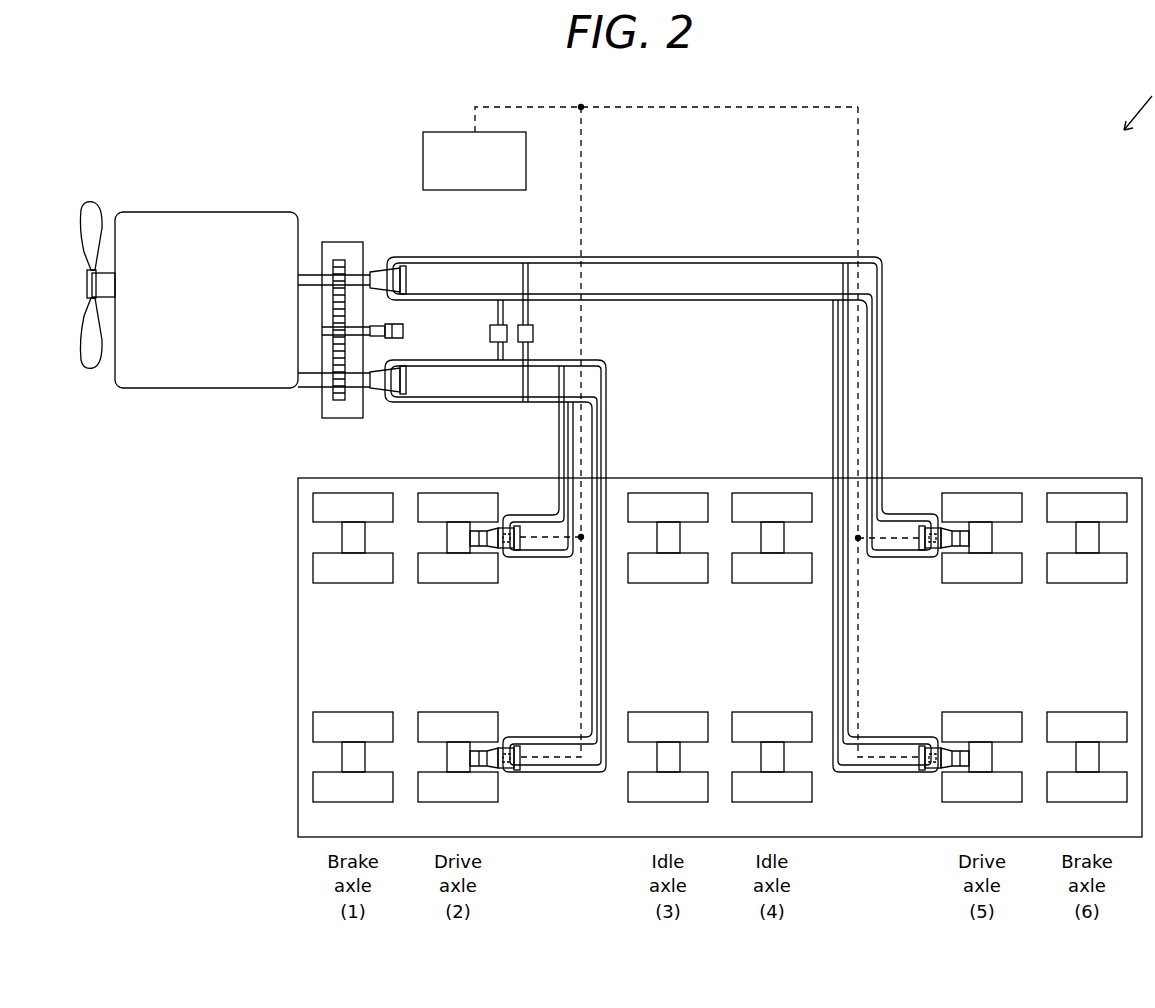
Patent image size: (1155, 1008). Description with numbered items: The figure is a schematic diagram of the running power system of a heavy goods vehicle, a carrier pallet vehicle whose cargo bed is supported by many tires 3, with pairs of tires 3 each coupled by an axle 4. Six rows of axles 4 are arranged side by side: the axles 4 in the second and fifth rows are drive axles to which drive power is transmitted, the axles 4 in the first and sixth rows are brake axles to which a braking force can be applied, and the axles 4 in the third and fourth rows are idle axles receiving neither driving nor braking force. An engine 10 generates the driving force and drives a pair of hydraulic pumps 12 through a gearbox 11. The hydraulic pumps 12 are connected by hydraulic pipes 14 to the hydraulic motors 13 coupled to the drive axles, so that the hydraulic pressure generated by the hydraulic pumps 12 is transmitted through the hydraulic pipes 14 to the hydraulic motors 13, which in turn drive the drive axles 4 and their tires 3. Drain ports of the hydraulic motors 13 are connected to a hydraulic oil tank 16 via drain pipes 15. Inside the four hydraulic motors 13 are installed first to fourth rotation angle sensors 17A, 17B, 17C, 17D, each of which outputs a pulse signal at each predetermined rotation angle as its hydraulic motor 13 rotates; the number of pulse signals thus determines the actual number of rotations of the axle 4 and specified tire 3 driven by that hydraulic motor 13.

The tire 3 is at (428, 553).
The axle 4 is at (460, 537).
The engine 10 is at (213, 212).
The gearbox 11 is at (345, 242).
The hydraulic pump 12 is at (378, 270).
The hydraulic motor 13 is at (522, 524).
The hydraulic pipe 14 is at (722, 257).
The drain pipe 15 is at (586, 190).
The hydraulic oil tank 16 is at (452, 132).
The first rotation angle sensor 17A is at (503, 527).
The second rotation angle sensor 17B is at (503, 747).
The third rotation angle sensor 17C is at (936, 527).
The fourth rotation angle sensor 17D is at (936, 747).